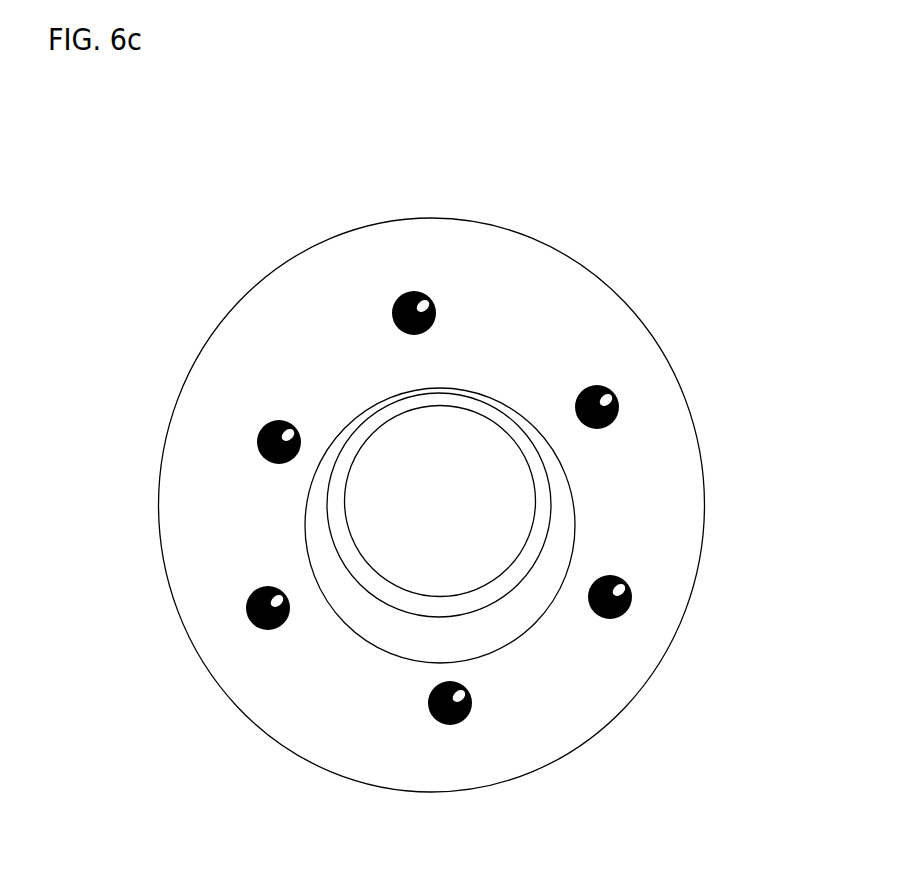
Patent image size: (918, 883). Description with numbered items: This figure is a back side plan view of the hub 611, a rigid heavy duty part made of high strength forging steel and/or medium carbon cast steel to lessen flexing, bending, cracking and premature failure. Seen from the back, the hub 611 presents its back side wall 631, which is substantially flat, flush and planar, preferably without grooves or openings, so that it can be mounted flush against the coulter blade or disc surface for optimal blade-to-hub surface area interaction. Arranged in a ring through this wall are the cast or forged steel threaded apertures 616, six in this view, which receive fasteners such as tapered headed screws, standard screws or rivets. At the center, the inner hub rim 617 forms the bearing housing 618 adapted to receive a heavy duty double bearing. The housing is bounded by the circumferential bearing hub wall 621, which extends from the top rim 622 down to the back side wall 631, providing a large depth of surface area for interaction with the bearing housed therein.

The hub 611 is at (342, 229).
The threaded apertures 616 is at (619, 398).
The inner hub rim 617 is at (488, 623).
The bearing housing 618 is at (478, 517).
The bearing hub wall 621 is at (352, 602).
The top rim 622 is at (345, 512).
The back side wall 631 is at (547, 303).